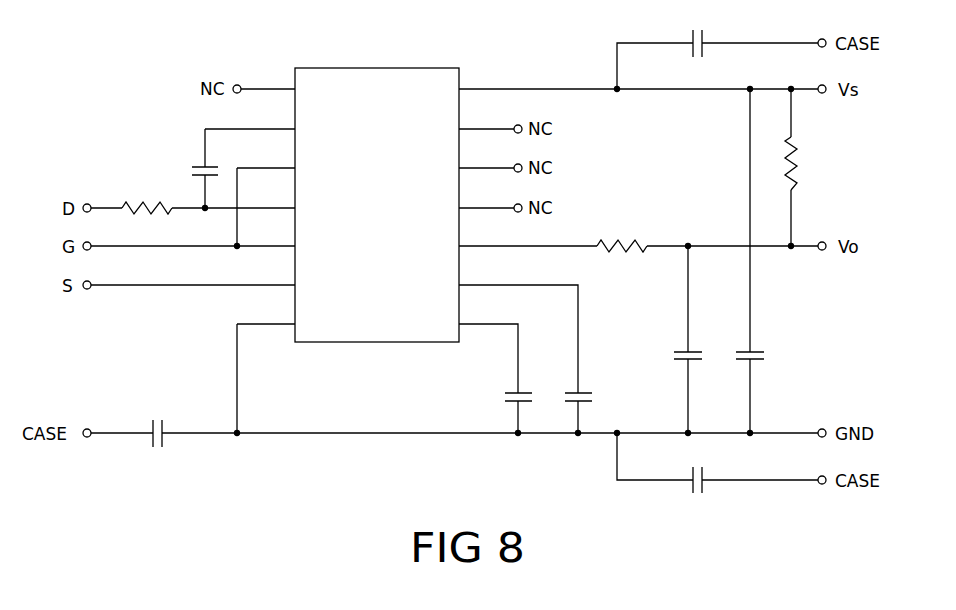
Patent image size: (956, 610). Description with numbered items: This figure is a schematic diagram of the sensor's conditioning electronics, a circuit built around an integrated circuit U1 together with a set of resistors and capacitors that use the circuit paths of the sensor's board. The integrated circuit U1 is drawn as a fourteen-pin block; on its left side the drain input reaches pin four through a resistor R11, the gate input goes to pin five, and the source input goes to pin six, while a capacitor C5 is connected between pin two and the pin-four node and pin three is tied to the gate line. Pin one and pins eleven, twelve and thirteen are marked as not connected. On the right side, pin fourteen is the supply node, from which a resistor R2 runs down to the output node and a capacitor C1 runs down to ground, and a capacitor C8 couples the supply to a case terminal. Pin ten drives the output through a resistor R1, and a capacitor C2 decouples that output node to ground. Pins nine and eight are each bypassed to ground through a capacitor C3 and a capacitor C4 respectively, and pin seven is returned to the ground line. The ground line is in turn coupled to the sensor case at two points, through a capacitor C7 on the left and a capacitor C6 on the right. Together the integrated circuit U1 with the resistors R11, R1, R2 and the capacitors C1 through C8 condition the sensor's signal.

The integrated circuit U1 is at (377, 205).
The resistor R11 is at (147, 194).
The resistor R1 is at (622, 232).
The resistor R2 is at (808, 167).
The capacitor C1 is at (765, 261).
The capacitor C2 is at (672, 339).
The capacitor C3 is at (541, 359).
The capacitor C4 is at (495, 378).
The capacitor C5 is at (198, 170).
The capacitor C6 is at (717, 478).
The capacitor C7 is at (146, 449).
The capacitor C8 is at (717, 50).